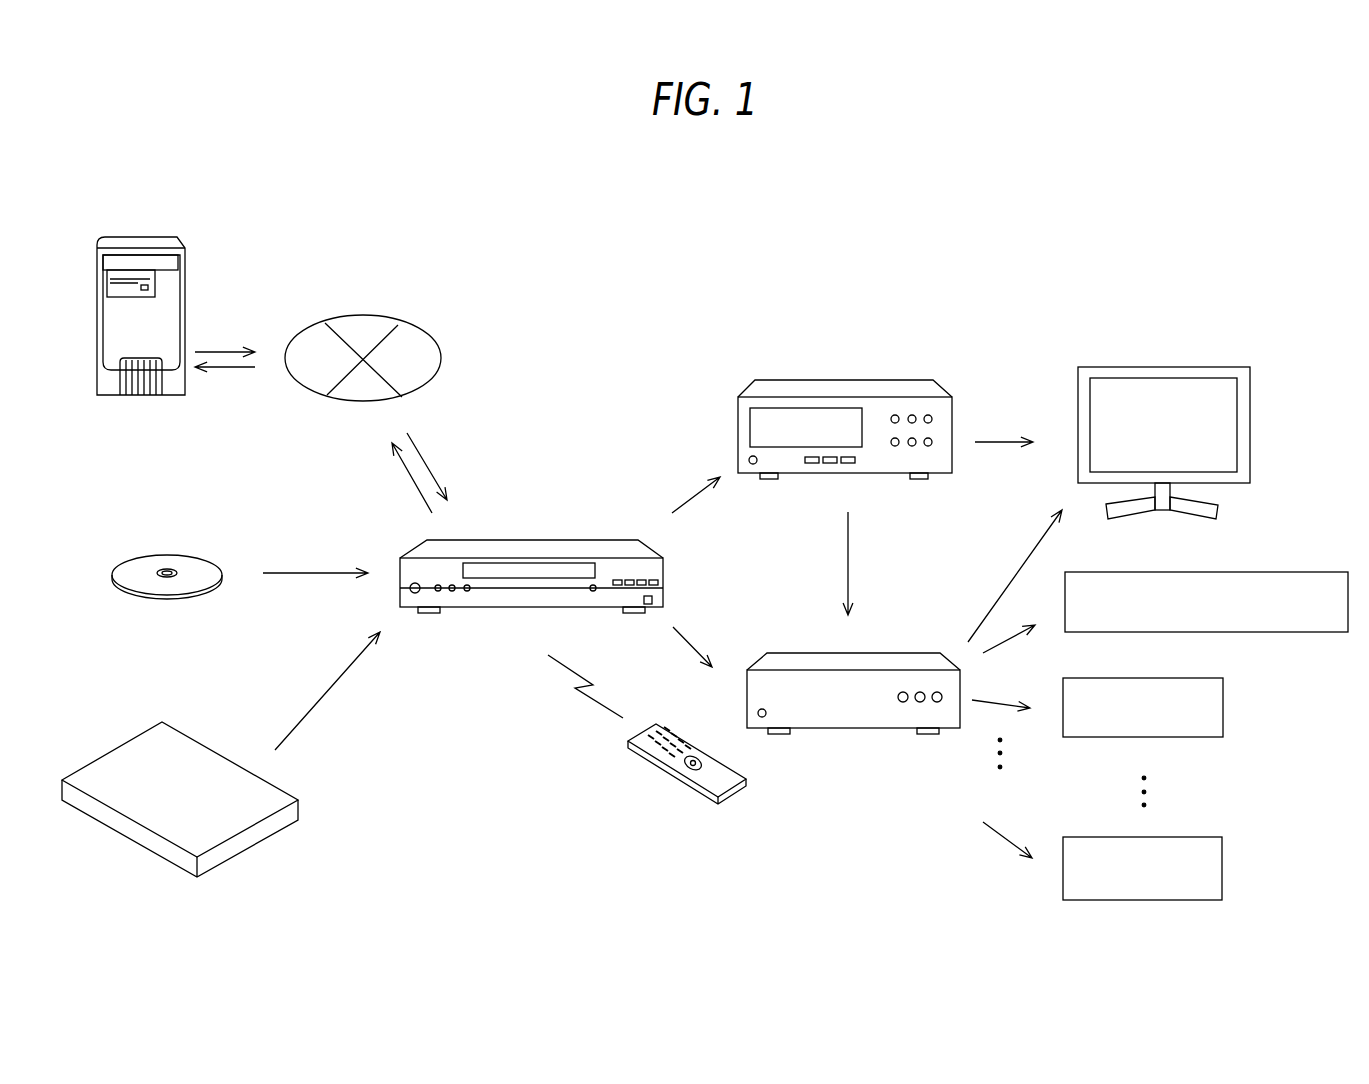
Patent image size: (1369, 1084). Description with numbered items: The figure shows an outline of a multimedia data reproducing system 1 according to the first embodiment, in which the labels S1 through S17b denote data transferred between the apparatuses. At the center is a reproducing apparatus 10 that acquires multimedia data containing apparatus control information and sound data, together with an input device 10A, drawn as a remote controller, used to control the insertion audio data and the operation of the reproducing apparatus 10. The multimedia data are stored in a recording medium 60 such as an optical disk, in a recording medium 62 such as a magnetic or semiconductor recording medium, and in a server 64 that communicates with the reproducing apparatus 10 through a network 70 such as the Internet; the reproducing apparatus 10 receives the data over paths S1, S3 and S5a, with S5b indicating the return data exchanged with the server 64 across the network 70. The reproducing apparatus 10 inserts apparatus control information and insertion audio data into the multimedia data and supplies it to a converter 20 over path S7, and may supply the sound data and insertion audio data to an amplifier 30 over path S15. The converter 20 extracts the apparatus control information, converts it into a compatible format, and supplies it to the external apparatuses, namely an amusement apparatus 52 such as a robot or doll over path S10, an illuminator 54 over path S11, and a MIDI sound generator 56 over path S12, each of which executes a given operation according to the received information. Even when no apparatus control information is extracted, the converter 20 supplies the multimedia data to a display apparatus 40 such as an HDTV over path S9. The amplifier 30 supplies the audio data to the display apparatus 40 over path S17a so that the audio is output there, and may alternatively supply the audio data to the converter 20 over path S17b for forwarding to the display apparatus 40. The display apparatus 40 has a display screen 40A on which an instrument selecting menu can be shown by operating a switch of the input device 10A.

The multimedia data reproducing system 1 is at (960, 230).
The reproducing apparatus 10 is at (507, 552).
The input device 10A is at (706, 802).
The converter 20 is at (865, 718).
The amplifier 30 is at (902, 390).
The display apparatus 40 is at (1206, 408).
The display screen 40A is at (1230, 425).
The amusement apparatus 52 is at (1318, 572).
The illuminator 54 is at (1223, 708).
The MIDI sound generator 56 is at (1222, 877).
The recording medium 60 is at (163, 556).
The recording medium 62 is at (136, 746).
The server 64 is at (152, 243).
The network 70 is at (412, 325).
The data transfer from recording medium 60 S1 is at (317, 571).
The data transfer from recording medium 62 S3 is at (322, 704).
The data transfer from server S5a is at (218, 350).
The data transfer to server S5b is at (218, 370).
The data transfer to converter S7 is at (693, 645).
The data transfer to display apparatus S9 is at (1005, 590).
The control information transfer to amusement apparatus S10 is at (1010, 645).
The control information transfer to illuminator S11 is at (987, 704).
The control information transfer to MIDI sound generator S12 is at (1003, 838).
The audio data transfer to amplifier S15 is at (693, 498).
The audio data transfer to display apparatus S17a is at (996, 440).
The audio data transfer to converter S17b is at (847, 562).